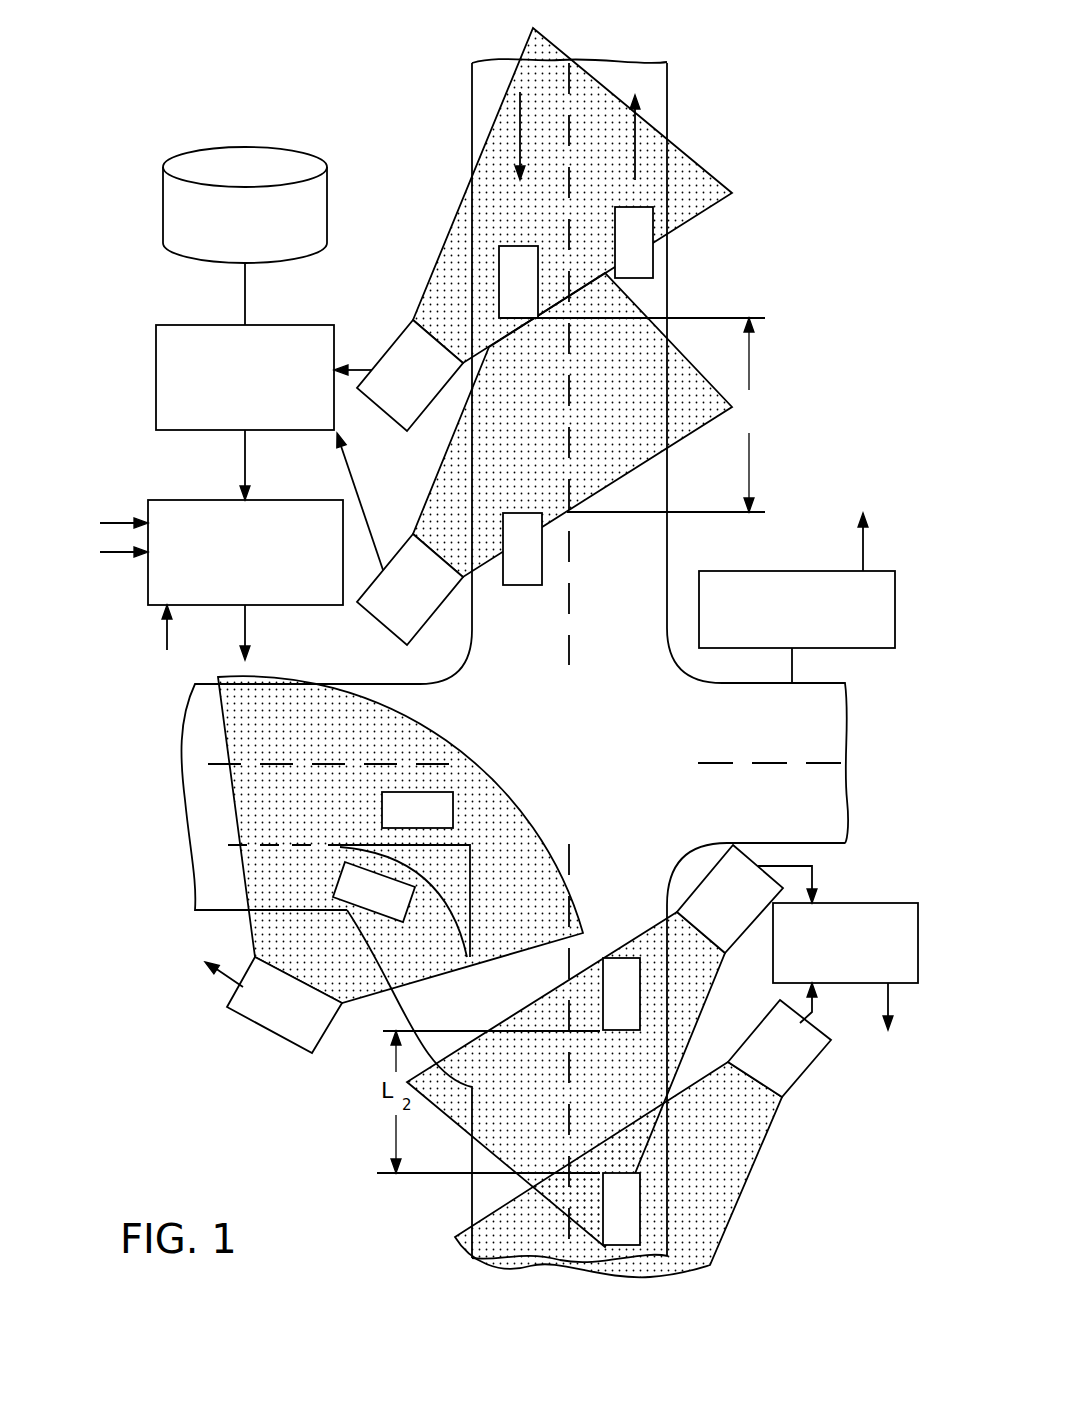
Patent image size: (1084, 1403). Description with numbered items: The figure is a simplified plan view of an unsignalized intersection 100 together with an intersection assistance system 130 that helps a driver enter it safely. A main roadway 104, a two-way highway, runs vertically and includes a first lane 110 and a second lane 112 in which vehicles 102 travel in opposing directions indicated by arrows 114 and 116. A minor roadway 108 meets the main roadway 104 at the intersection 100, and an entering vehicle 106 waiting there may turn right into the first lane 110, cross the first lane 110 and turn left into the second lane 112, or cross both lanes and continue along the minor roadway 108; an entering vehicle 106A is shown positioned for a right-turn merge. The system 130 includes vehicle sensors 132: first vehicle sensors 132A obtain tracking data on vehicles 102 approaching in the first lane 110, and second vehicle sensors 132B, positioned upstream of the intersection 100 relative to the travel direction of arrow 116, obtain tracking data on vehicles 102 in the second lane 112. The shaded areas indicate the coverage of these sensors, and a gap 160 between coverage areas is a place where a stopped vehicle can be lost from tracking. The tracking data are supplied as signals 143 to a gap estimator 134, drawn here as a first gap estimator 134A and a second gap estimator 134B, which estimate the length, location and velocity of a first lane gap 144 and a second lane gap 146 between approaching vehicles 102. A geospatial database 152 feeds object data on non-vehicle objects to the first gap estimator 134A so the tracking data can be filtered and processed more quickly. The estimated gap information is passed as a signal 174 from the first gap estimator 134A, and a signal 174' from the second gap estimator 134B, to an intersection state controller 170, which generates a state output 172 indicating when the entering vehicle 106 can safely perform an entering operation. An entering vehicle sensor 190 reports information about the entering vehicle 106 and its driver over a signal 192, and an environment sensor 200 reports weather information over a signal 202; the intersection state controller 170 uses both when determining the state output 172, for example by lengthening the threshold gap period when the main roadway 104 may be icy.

The unsignalized intersection 100 is at (806, 458).
The vehicles 102 is at (647, 251).
The main roadway 104 is at (641, 543).
The entering vehicle 106 is at (444, 796).
The entering vehicle 106A is at (342, 878).
The minor roadway 108 is at (198, 811).
The first lane 110 is at (472, 72).
The second lane 112 is at (658, 75).
The arrow 114 is at (518, 128).
The arrow 116 is at (637, 136).
The intersection assistance system 130 is at (190, 100).
The vehicle sensor 132 is at (593, 686).
The first vehicle sensors 132A is at (403, 325).
The second vehicle sensors 132B is at (708, 878).
The gap estimator 134 is at (529, 651).
The first gap estimator 134A is at (210, 325).
The second gap estimator 134B is at (857, 983).
The signals 143 is at (363, 368).
The first lane gap 144 is at (505, 433).
The second lane gap 146 is at (620, 1098).
The geospatial database 152 is at (282, 158).
The gap 160 is at (657, 308).
The intersection state controller 170 is at (284, 500).
The state output 172 is at (252, 620).
The signal 174 is at (274, 465).
The signal 174' is at (508, 813).
The entering vehicle sensor 190 is at (276, 1033).
The signal 192 is at (167, 635).
The environment sensor 200 is at (792, 686).
The signal 202 is at (113, 520).